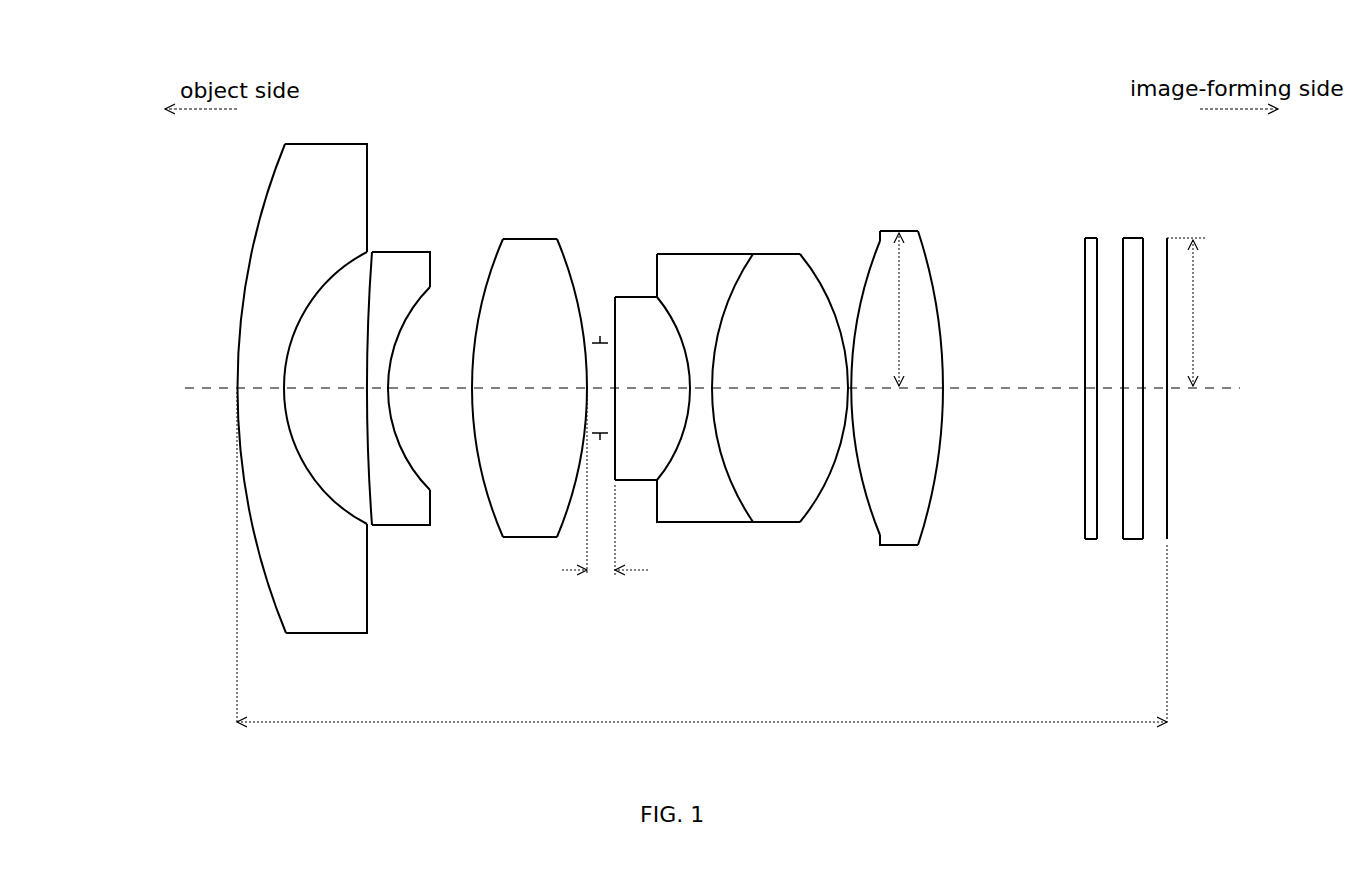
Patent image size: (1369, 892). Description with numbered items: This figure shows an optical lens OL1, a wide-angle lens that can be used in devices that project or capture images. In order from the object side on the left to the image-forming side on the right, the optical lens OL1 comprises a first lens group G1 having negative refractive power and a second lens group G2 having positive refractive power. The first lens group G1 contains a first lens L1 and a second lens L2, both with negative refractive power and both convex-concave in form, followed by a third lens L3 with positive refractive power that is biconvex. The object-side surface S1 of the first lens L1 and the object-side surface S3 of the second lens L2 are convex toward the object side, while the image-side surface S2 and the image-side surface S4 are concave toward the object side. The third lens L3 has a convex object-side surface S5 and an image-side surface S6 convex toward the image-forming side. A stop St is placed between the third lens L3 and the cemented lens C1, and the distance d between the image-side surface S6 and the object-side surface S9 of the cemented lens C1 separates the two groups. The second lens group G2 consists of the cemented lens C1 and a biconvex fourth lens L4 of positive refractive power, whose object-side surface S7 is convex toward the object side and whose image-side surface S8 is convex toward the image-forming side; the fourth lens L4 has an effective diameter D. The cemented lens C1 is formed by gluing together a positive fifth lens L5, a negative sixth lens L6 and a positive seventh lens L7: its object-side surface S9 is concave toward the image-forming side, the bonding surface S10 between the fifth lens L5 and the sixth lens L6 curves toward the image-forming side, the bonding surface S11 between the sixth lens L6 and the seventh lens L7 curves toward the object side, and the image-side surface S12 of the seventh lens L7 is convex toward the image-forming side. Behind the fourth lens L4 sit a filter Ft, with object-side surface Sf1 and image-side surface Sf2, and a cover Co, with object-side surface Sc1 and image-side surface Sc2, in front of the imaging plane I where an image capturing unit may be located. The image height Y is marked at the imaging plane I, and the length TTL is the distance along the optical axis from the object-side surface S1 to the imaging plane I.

The optical lens OL1 is at (116, 72).
The first lens group G1 is at (400, 421).
The second lens group G2 is at (786, 429).
The first lens L1 is at (290, 416).
The second lens L2 is at (380, 418).
The third lens L3 is at (529, 396).
The fourth lens L4 is at (904, 414).
The fifth lens L5 is at (655, 396).
The sixth lens L6 is at (708, 396).
The seventh lens L7 is at (800, 396).
The cemented lens C1 is at (731, 412).
The object-side surface of the first lens S1 is at (250, 250).
The image-side surface of the first lens S2 is at (333, 285).
The object-side surface of the second lens S3 is at (366, 408).
The image-side surface of the second lens S4 is at (414, 307).
The object-side surface of the third lens S5 is at (491, 268).
The image-side surface of the third lens S6 is at (568, 265).
The object-side surface of the fourth lens S7 is at (863, 278).
The image-side surface of the fourth lens S8 is at (928, 263).
The object-side surface of the fifth lens S9 is at (616, 308).
The bonding surface between the fifth lens and the sixth lens S10 is at (665, 306).
The bonding surface between the sixth lens and the seventh lens S11 is at (738, 281).
The image-side surface of the seventh lens S12 is at (811, 268).
The stop St is at (600, 335).
The filter Ft is at (1079, 396).
The object-side surface of the filter Sf1 is at (1084, 258).
The image-side surface of the filter Sf2 is at (1098, 258).
The cover Co is at (1103, 396).
The object-side surface of the cover Sc1 is at (1122, 328).
The image-side surface of the cover Sc2 is at (1144, 258).
The imaging plane I is at (1189, 419).
The effective diameter D is at (909, 309).
The distance between the third lens and the cemented lens d is at (605, 496).
The image height Y is at (1189, 312).
The length TTL is at (702, 576).